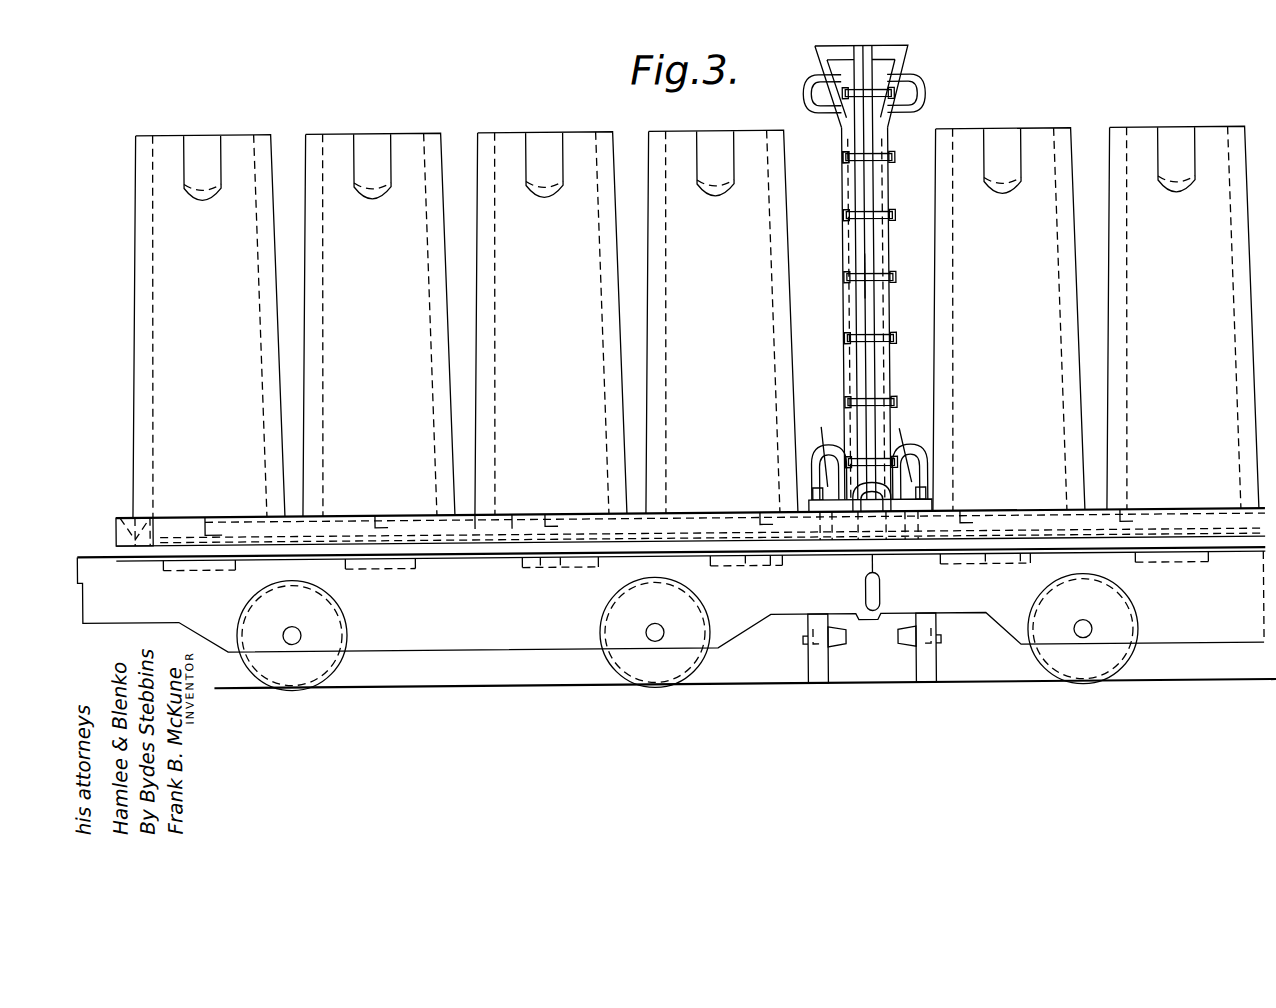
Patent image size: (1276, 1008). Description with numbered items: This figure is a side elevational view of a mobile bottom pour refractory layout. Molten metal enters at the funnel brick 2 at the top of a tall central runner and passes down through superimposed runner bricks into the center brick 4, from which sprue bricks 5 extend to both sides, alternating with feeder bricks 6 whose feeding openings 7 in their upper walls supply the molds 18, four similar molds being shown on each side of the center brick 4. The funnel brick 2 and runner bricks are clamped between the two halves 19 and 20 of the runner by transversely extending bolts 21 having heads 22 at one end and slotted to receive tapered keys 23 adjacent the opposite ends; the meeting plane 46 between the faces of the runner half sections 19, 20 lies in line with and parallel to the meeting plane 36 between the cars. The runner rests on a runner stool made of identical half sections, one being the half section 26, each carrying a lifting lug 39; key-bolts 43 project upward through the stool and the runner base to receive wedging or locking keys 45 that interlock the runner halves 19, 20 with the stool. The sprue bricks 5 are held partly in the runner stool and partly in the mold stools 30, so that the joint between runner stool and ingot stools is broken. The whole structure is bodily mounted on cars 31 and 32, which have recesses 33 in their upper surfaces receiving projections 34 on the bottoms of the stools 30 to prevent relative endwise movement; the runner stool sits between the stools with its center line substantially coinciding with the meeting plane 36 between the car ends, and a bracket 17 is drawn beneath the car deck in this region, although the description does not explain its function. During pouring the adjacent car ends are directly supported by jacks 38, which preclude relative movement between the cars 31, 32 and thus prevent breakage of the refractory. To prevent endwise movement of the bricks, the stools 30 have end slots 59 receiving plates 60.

The funnel brick 2 is at (913, 64).
The center brick 4 is at (880, 580).
The sprue bricks 5 is at (660, 518).
The feeder bricks 6 is at (505, 523).
The feeding openings 7 is at (382, 515).
The bracket 17 is at (770, 563).
The molds 18 is at (493, 137).
The runner half section 19 is at (893, 247).
The runner half section 20 is at (849, 246).
The transversely extending bolts 21 is at (894, 162).
The bolt heads 22 is at (851, 158).
The tapered keys 23 is at (890, 150).
The runner stool half section 26 is at (805, 549).
The mold stools 30 is at (500, 546).
The car 31 is at (528, 648).
The car 32 is at (1198, 616).
The recesses 33 is at (562, 567).
The projections 34 is at (540, 560).
The meeting plane 36 is at (858, 575).
The jacks 38 is at (923, 655).
The lifting lug 39 is at (912, 450).
The bolt 43 is at (827, 449).
The wedging or locking key 45 is at (812, 494).
The meeting plane 46 is at (870, 270).
The end slots 59 is at (130, 515).
The plates 60 is at (150, 520).